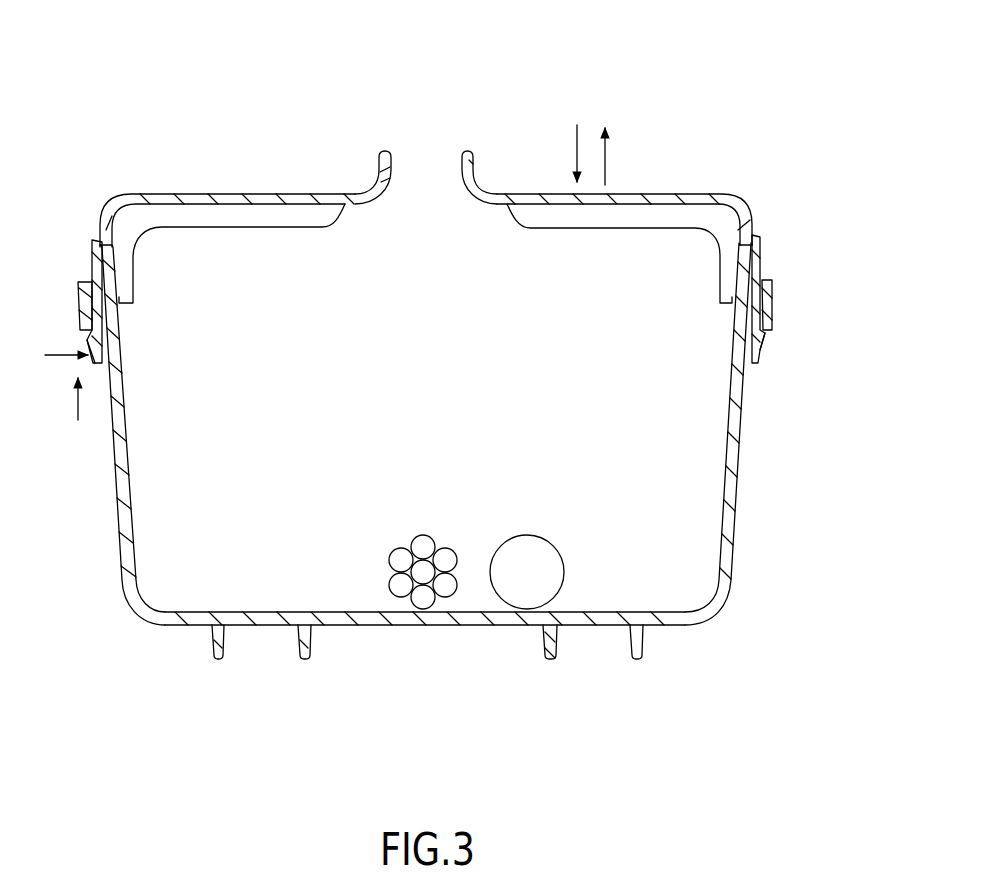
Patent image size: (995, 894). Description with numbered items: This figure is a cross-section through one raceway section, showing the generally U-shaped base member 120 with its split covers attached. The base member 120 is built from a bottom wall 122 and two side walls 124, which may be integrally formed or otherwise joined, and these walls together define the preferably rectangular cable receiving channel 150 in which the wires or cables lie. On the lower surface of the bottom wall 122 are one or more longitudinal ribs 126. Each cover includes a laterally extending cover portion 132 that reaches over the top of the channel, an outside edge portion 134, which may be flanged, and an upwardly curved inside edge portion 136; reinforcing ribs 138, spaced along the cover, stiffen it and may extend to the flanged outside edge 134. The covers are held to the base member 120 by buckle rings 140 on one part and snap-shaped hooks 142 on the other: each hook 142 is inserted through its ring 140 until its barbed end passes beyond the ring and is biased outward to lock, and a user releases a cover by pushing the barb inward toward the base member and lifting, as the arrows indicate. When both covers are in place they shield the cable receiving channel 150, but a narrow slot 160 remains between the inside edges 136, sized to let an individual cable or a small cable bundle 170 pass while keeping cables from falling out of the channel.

The base member 120 is at (752, 551).
The bottom wall 122 is at (483, 627).
The side walls 124 is at (122, 530).
The longitudinal ribs 126 is at (635, 662).
The cover portion 132 is at (632, 193).
The outside edge portion 134 is at (747, 222).
The inside edge portion 136 is at (462, 178).
The reinforcing ribs 138 is at (667, 217).
The buckle rings 140 is at (773, 293).
The snap-shaped hooks 142 is at (767, 347).
The cable receiving channel 150 is at (455, 450).
The slot 160 is at (423, 152).
The cable bundle 170 is at (523, 535).